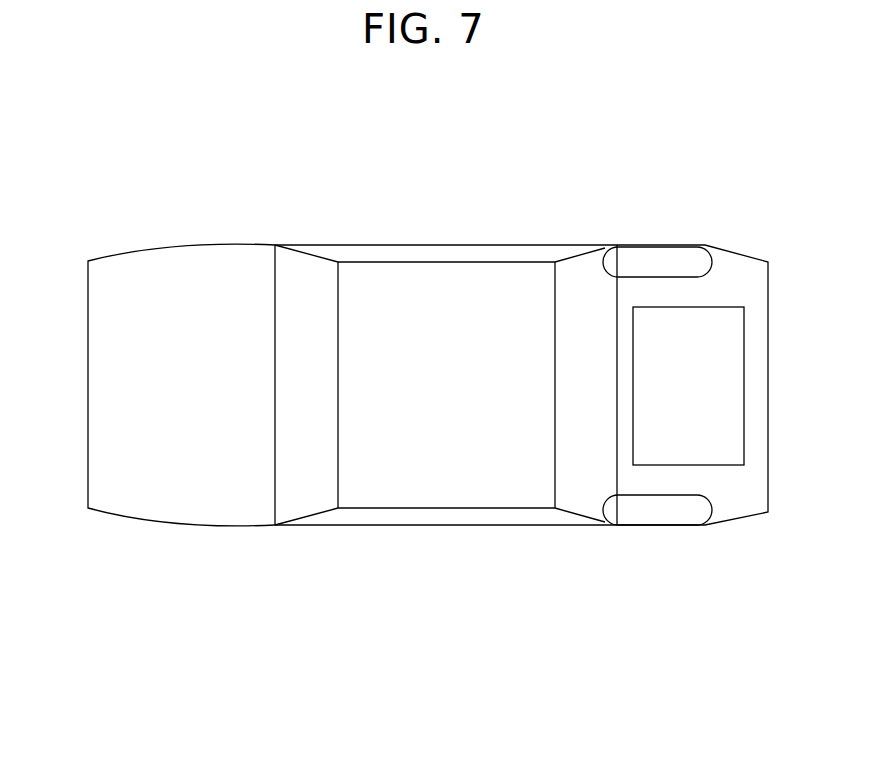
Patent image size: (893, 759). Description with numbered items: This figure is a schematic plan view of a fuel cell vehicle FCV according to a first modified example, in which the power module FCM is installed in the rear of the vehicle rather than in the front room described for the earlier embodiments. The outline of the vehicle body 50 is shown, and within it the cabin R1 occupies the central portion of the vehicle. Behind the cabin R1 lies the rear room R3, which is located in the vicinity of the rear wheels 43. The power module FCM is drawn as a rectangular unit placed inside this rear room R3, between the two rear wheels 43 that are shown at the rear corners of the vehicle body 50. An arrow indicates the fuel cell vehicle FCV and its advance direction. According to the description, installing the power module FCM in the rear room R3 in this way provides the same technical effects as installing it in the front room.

The vehicle body 50 is at (220, 245).
The rear wheels 43 is at (680, 513).
The power module FCM is at (723, 338).
The cabin R1 is at (320, 401).
The rear room R3 is at (732, 492).
The fuel cell vehicle FCV is at (438, 576).